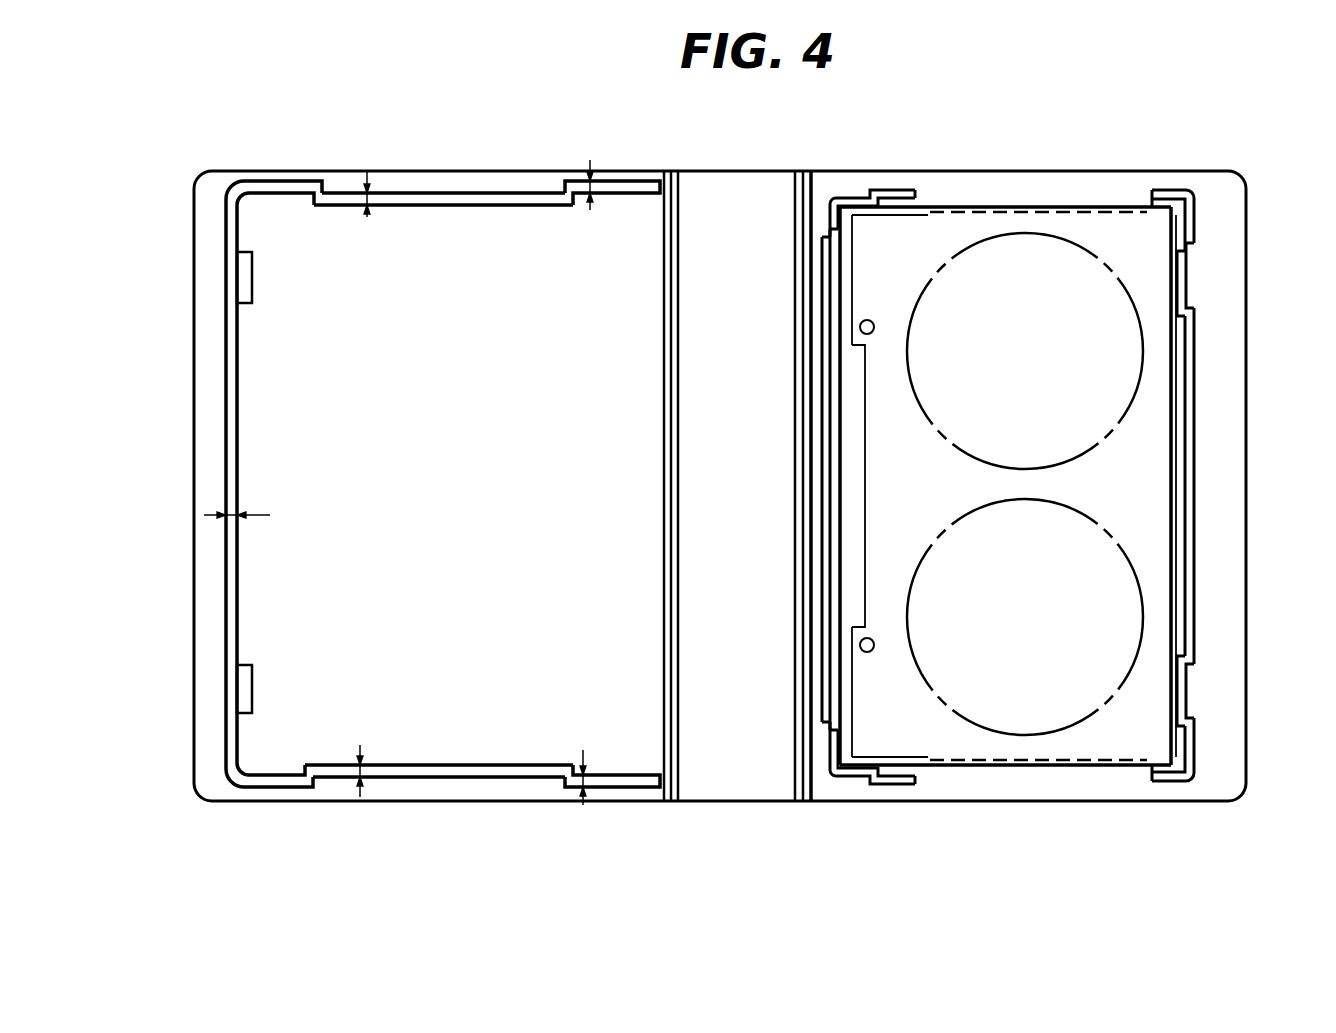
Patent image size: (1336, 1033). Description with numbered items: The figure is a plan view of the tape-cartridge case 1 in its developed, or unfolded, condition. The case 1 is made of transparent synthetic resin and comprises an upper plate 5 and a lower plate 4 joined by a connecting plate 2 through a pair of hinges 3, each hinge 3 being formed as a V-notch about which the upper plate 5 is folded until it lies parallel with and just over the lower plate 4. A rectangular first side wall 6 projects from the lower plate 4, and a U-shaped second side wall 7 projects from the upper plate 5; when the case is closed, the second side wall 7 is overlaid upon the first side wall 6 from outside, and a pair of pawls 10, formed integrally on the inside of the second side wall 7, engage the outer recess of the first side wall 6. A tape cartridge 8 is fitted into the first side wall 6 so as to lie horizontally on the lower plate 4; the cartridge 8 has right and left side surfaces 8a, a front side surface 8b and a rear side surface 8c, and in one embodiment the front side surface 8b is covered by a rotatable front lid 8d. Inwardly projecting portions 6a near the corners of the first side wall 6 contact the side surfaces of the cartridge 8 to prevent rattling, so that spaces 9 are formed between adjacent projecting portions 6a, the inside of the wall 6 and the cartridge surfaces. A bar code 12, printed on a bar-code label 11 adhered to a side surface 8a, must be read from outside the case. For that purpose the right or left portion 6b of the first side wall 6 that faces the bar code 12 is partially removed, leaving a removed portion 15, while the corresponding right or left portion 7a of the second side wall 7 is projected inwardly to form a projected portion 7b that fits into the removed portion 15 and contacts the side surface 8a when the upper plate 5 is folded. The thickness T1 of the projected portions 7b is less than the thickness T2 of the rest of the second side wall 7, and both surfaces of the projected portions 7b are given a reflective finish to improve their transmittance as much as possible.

The tape-cartridge case 1 is at (725, 429).
The connecting plate 2 is at (722, 205).
The hinges 3 is at (795, 776).
The lower plate 4 is at (1228, 515).
The upper plate 5 is at (205, 562).
The first side wall 6 is at (1028, 492).
The inwardly projecting portions 6a is at (846, 198).
The right or left portion of the first side wall 6b is at (893, 190).
The second side wall 7 is at (402, 476).
The right or left portion of the second side wall 7a is at (282, 181).
The projected portion 7b is at (490, 193).
The tape cartridge 8 is at (1018, 489).
The right and left side surfaces 8a is at (1022, 207).
The front side surface 8b is at (838, 478).
The rear side surface 8c is at (1188, 482).
The rotatable front lid 8d is at (852, 535).
The spaces 9 is at (832, 397).
The pawls 10 is at (253, 277).
The bar-code label 11 is at (1075, 211).
The bar code 12 is at (995, 207).
The removed portion 15 is at (918, 194).
The thickness of the projected portions T1 is at (369, 200).
The thickness of the rest of the second side wall T2 is at (592, 192).